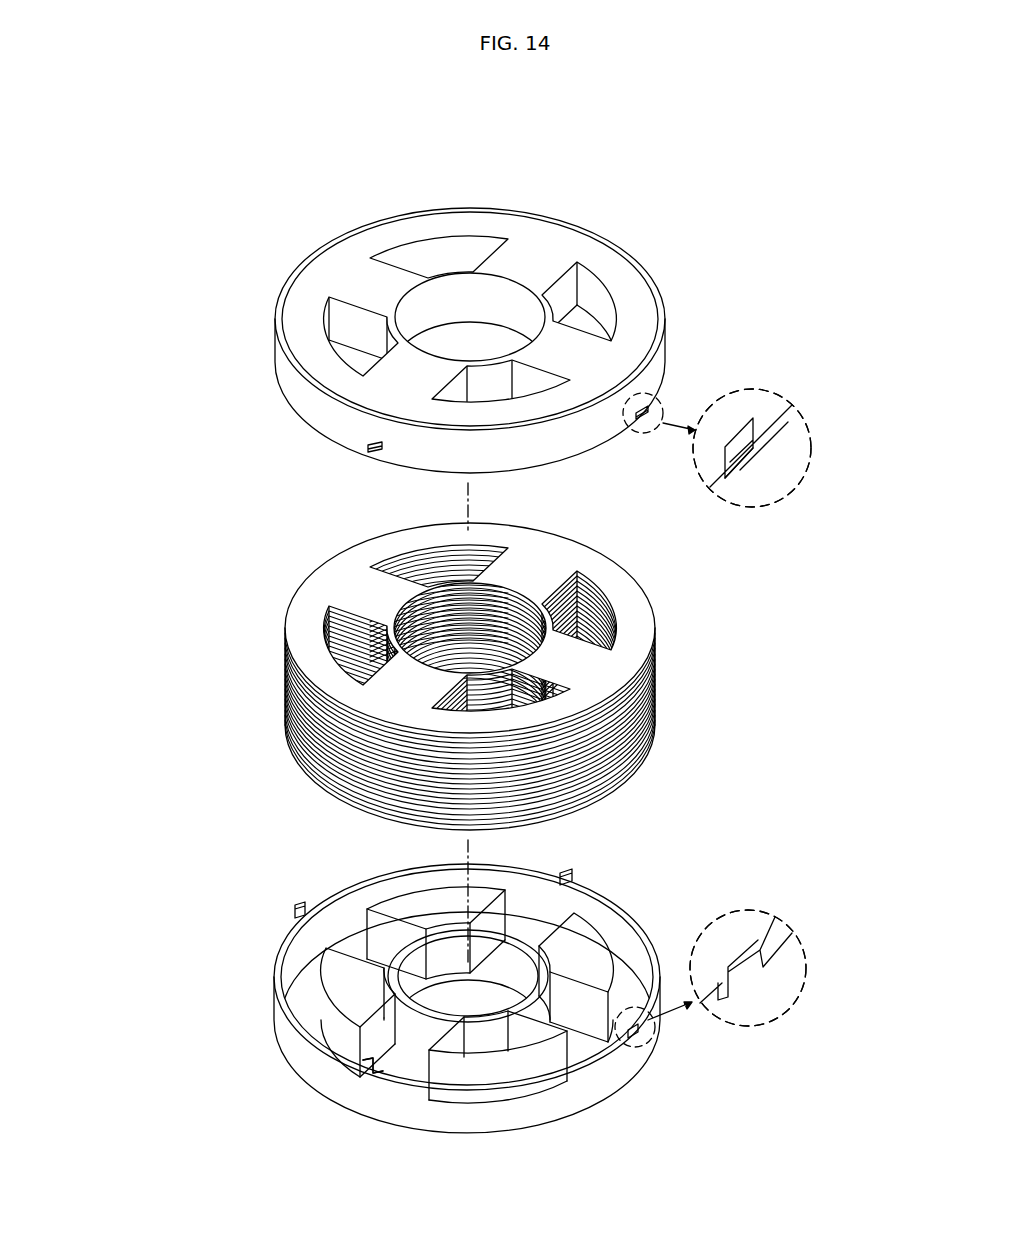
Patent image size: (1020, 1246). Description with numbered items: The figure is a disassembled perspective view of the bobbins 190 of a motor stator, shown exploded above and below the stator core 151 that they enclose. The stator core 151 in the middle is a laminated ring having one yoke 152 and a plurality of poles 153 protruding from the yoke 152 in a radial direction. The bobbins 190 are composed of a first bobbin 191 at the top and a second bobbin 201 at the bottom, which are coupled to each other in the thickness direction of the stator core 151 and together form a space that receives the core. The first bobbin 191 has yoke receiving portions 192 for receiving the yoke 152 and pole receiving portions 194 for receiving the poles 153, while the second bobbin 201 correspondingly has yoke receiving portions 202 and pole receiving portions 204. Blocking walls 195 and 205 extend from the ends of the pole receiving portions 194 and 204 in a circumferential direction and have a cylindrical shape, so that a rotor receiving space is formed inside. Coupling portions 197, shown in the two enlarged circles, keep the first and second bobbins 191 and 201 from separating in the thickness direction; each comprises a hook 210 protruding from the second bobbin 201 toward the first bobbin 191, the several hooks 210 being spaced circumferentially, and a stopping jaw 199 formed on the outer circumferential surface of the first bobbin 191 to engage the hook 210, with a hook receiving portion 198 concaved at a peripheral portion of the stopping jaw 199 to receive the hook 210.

The bobbin 190 is at (128, 648).
The first bobbin 191 is at (293, 405).
The yoke receiving portion 192 is at (430, 230).
The pole receiving portion 194 is at (518, 258).
The blocking wall 195 is at (465, 295).
The hook receiving portion 198 is at (765, 455).
The stopping jaw 199 is at (758, 452).
The coupling portion 197 is at (838, 500).
The stator core 151 is at (724, 624).
The yoke 152 is at (608, 614).
The pole 153 is at (530, 580).
The second bobbin 201 is at (280, 940).
The yoke receiving portion 202 is at (300, 996).
The pole receiving portion 204 is at (378, 1042).
The blocking wall 205 is at (420, 1035).
The hook 210 is at (723, 977).